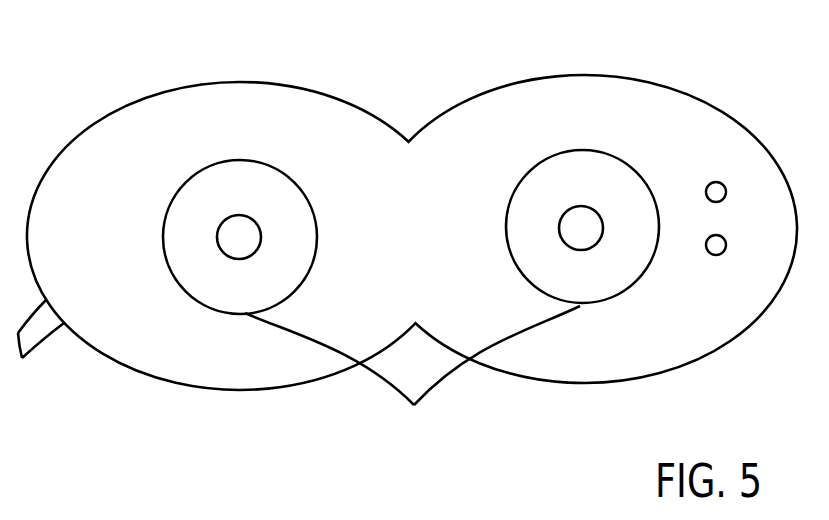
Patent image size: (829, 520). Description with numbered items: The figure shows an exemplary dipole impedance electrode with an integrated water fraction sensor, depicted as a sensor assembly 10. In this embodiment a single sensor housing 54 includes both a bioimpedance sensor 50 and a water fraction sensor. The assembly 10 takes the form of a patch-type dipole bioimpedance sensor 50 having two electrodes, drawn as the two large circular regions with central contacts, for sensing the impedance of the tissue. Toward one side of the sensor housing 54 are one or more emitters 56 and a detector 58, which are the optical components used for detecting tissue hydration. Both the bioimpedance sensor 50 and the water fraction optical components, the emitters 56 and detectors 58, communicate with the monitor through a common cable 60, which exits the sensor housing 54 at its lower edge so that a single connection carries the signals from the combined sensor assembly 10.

The sensor assembly 10 is at (136, 54).
The bioimpedance sensor 50 is at (412, 374).
The sensor housing 54 is at (589, 75).
The emitter 56 is at (716, 182).
The detector 58 is at (725, 242).
The common cable 60 is at (43, 343).